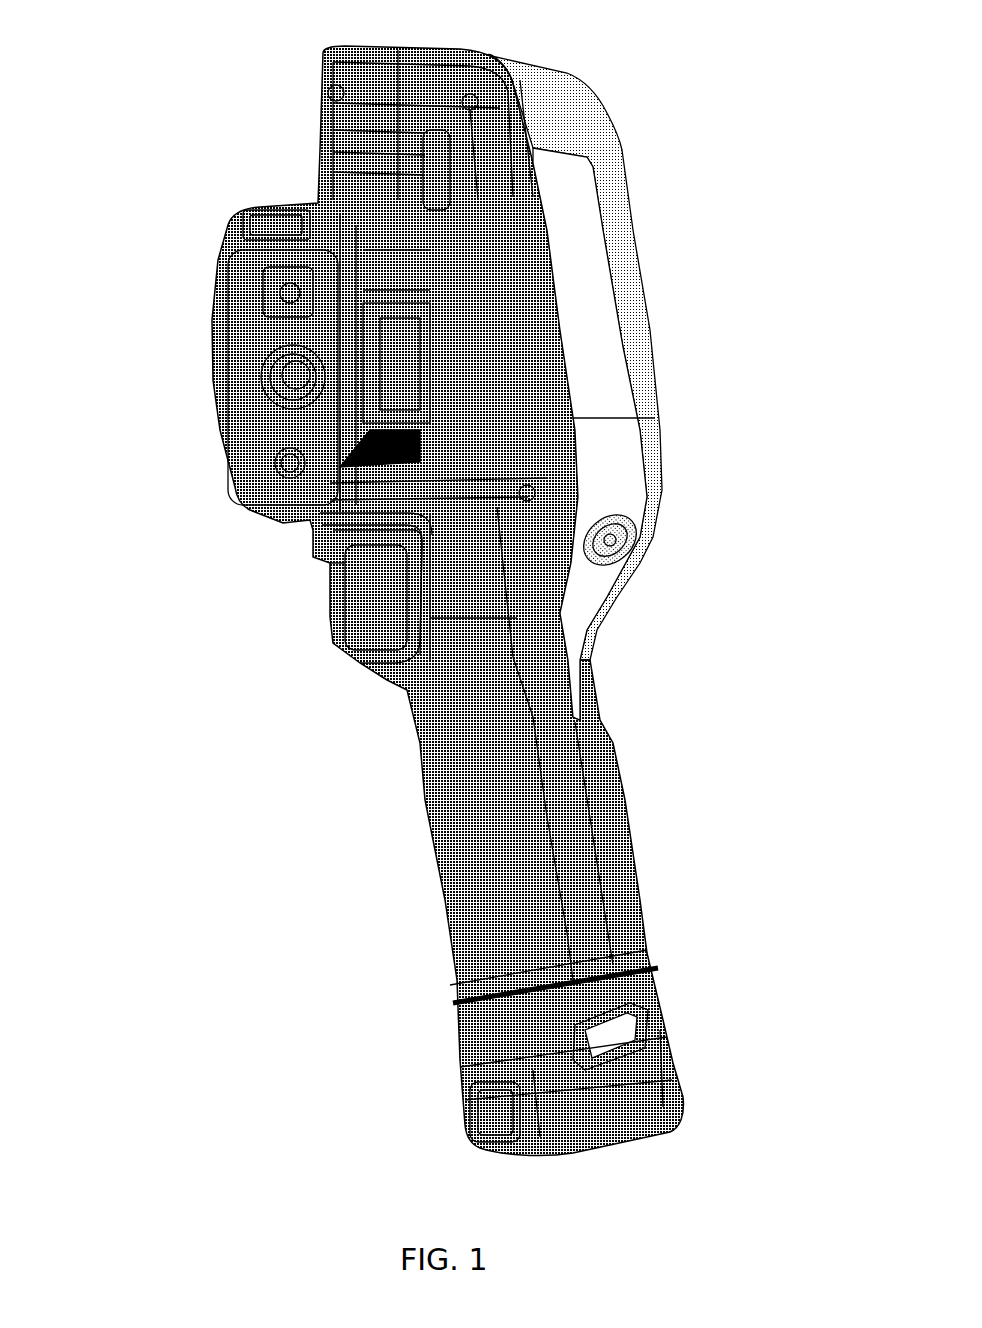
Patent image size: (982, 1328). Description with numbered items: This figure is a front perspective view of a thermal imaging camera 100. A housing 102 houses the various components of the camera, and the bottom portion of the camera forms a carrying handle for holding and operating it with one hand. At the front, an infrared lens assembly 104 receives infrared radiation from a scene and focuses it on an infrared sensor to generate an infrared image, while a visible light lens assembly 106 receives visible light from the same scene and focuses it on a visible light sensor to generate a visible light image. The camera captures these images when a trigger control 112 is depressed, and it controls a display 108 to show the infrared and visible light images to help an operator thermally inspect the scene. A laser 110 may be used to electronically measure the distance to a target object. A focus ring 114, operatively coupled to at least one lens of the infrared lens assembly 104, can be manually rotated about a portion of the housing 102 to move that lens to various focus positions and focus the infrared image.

The thermal imaging camera 100 is at (448, 594).
The housing 102 is at (563, 98).
The infrared lens assembly 104 is at (308, 396).
The visible light lens assembly 106 is at (310, 292).
The display 108 is at (660, 226).
The laser 110 is at (293, 463).
The trigger control 112 is at (350, 617).
The focus ring 114 is at (347, 464).